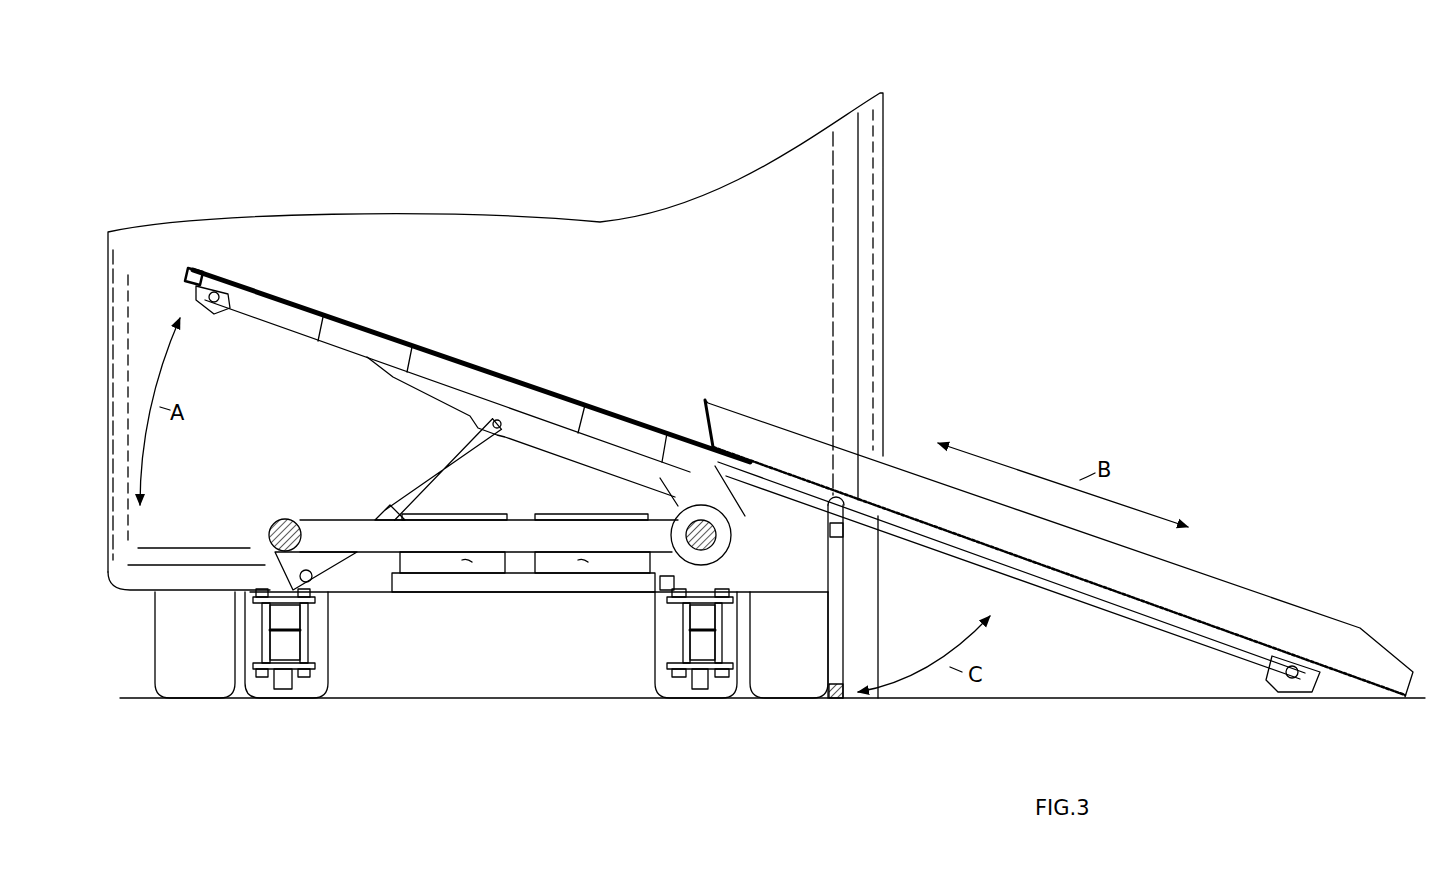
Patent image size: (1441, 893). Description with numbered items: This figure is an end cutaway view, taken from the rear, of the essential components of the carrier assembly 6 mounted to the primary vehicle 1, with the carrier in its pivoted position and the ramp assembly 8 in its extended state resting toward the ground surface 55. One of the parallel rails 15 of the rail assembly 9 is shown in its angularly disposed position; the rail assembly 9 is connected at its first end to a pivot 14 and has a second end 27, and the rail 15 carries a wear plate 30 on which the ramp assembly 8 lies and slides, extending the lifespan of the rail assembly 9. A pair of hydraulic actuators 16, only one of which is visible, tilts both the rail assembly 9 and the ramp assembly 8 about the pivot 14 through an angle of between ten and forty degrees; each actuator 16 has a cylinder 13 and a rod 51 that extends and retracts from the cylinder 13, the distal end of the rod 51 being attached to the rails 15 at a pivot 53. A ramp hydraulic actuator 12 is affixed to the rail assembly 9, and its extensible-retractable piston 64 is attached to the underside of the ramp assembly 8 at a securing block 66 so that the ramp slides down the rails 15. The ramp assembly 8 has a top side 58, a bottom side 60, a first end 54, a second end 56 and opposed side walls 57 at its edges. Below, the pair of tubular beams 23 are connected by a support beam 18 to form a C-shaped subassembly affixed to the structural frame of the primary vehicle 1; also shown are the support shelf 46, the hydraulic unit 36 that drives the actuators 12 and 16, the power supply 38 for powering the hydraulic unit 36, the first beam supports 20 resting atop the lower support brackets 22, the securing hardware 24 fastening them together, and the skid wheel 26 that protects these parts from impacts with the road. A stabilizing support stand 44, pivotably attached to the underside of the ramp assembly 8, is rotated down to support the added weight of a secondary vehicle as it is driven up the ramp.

The primary vehicle 1 is at (688, 165).
The carrier assembly 6 is at (945, 403).
The ramp assembly 8 is at (1243, 582).
The rail assembly 9 is at (182, 278).
The ramp hydraulic actuator 12 is at (385, 332).
The cylinder 13 is at (375, 520).
The pivot 14 is at (745, 553).
The parallel rail 15 is at (395, 370).
The hydraulic actuator 16 is at (382, 498).
The support beam 18 is at (605, 578).
The first beam support 20 is at (297, 612).
The lower support bracket 22 is at (307, 647).
The tubular beam 23 is at (272, 529).
The mechanical fastener 24 is at (282, 672).
The skid wheel 26 is at (290, 690).
The second end 27 is at (235, 274).
The wear plate 30 is at (289, 300).
The hydraulic unit 36 is at (598, 585).
The power supply 38 is at (470, 565).
The stabilizing support stand 44 is at (845, 628).
The support shelf 46 is at (440, 595).
The rod 51 is at (460, 456).
The pivot 53 is at (525, 415).
The first end 54 is at (705, 400).
The ground surface 55 is at (1132, 700).
The second end 56 is at (1400, 660).
The side wall 57 is at (1185, 601).
The top side 58 is at (1290, 604).
The bottom side 60 is at (1097, 590).
The extensible-retractable piston 64 is at (1025, 597).
The securing block 66 is at (1283, 683).